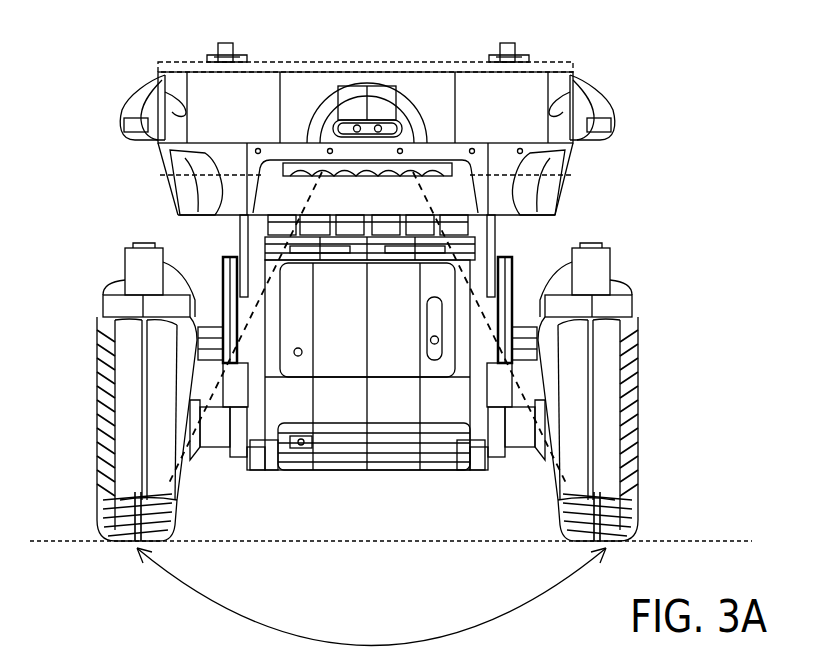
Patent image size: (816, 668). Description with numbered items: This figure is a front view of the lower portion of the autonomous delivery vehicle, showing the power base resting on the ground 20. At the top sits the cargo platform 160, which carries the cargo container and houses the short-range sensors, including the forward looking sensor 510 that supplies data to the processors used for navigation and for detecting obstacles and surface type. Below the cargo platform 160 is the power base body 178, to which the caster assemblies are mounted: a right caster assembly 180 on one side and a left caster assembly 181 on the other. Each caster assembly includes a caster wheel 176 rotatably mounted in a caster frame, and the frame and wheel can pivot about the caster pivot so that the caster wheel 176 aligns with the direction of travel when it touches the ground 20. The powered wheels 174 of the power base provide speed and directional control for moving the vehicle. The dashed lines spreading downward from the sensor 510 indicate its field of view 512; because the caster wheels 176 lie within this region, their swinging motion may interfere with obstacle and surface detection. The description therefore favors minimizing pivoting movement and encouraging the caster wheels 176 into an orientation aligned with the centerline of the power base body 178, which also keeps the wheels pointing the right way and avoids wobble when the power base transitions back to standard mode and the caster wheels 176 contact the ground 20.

The ground 20 is at (68, 546).
The cargo platform 160 is at (588, 110).
The powered wheel 174 is at (637, 507).
The caster wheel 176 is at (127, 404).
The power base body 178 is at (355, 410).
The right caster assembly 180 is at (101, 249).
The left caster assembly 181 is at (623, 242).
The short-range sensor 510 is at (356, 118).
The field of view 512 is at (218, 605).